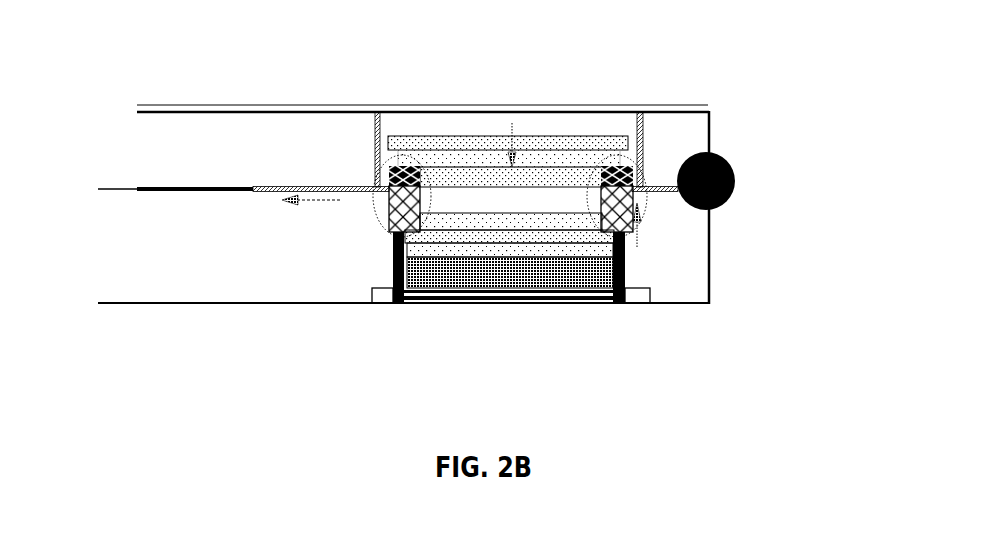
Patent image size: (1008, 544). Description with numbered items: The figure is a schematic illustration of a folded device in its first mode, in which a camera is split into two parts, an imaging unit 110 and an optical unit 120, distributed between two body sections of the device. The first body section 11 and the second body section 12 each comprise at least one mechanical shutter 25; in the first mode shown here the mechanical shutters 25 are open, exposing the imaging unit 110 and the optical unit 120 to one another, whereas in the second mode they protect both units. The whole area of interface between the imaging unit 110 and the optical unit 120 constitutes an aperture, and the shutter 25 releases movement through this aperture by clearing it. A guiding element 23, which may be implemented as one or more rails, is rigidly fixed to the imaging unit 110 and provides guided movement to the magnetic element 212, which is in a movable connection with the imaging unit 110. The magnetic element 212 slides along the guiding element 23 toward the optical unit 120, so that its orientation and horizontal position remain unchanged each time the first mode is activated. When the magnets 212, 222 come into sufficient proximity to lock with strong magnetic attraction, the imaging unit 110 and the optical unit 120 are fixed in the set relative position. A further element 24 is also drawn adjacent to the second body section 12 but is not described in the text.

The first body section 11 is at (217, 303).
The second body section 12 is at (712, 125).
The guiding element 23 is at (403, 303).
The sealing ball 24 is at (733, 192).
The mechanical shutter 25 is at (278, 195).
The imaging unit 110 is at (643, 268).
The optical unit 120 is at (587, 132).
The magnetic element 212 is at (390, 220).
The magnet 222 is at (388, 176).